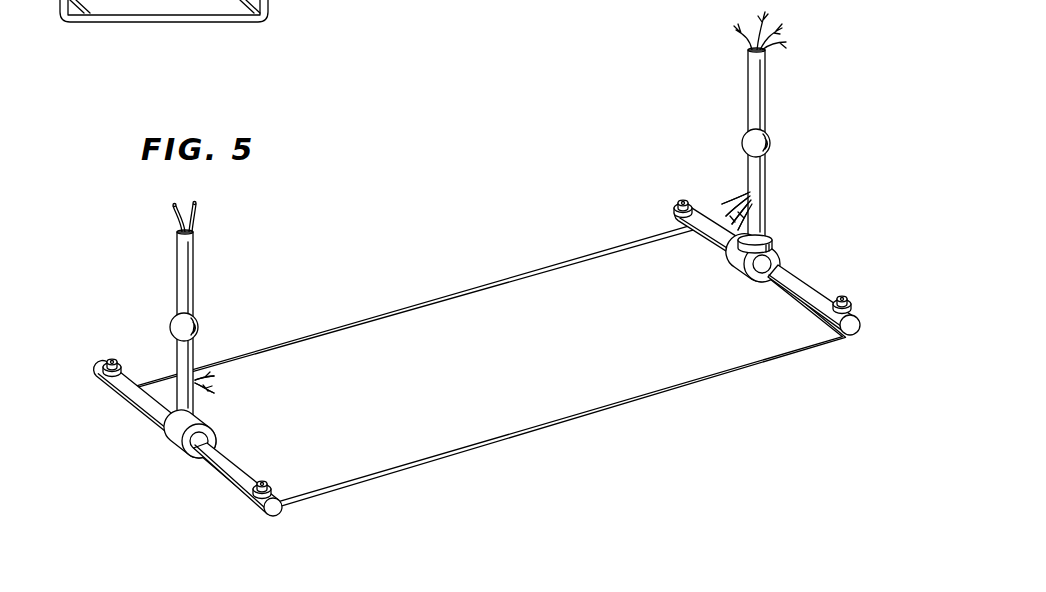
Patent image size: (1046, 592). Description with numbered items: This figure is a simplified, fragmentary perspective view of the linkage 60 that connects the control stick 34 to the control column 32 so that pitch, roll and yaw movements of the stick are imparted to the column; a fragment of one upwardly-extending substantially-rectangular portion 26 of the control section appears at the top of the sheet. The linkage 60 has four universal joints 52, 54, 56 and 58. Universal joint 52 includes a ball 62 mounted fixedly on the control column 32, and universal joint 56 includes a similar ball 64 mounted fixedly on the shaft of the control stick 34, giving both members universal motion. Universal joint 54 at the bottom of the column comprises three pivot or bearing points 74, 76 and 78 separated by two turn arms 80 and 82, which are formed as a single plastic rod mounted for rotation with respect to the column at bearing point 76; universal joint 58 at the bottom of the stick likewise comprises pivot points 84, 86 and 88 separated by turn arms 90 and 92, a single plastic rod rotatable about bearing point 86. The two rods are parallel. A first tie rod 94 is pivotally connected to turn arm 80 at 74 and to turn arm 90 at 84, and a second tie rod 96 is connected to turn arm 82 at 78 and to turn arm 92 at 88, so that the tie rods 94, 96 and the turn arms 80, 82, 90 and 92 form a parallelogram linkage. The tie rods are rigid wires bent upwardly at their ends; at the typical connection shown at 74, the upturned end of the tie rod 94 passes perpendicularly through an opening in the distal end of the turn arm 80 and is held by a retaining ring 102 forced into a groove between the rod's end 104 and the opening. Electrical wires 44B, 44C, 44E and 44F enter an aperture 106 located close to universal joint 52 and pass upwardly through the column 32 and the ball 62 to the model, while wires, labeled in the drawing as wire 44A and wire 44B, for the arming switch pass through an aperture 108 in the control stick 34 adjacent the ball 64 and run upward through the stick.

The upwardly-extending substantially-rectangular portion 26 is at (150, 23).
The control column 32 is at (748, 102).
The control stick 34 is at (180, 282).
The wire 44A is at (198, 208).
The electrical wire 44B is at (176, 210).
The electrical wire 44C is at (770, 45).
The electrical wire 44E is at (760, 30).
The electrical wire 44F is at (740, 36).
The universal joint 52 is at (763, 191).
The universal joint 54 is at (762, 355).
The universal joint 56 is at (182, 373).
The universal joint 58 is at (260, 357).
The linkage 60 is at (527, 366).
The ball 62 is at (771, 143).
The ball 64 is at (170, 327).
The pivot point 74 is at (866, 311).
The bearing point 76 is at (736, 291).
The pivot point 78 is at (672, 208).
The turn arm 80 is at (797, 290).
The turn arm 82 is at (707, 248).
The pivot point 84 is at (274, 487).
The bearing point 86 is at (162, 461).
The pivot point 88 is at (94, 370).
The turn arm 90 is at (222, 485).
The turn arm 92 is at (128, 406).
The first tie rod 94 is at (612, 398).
The second tie rod 96 is at (520, 270).
The retaining ring 102 is at (823, 320).
The end of tie rod 104 is at (852, 298).
The aperture 106 is at (758, 198).
The aperture 108 is at (200, 378).